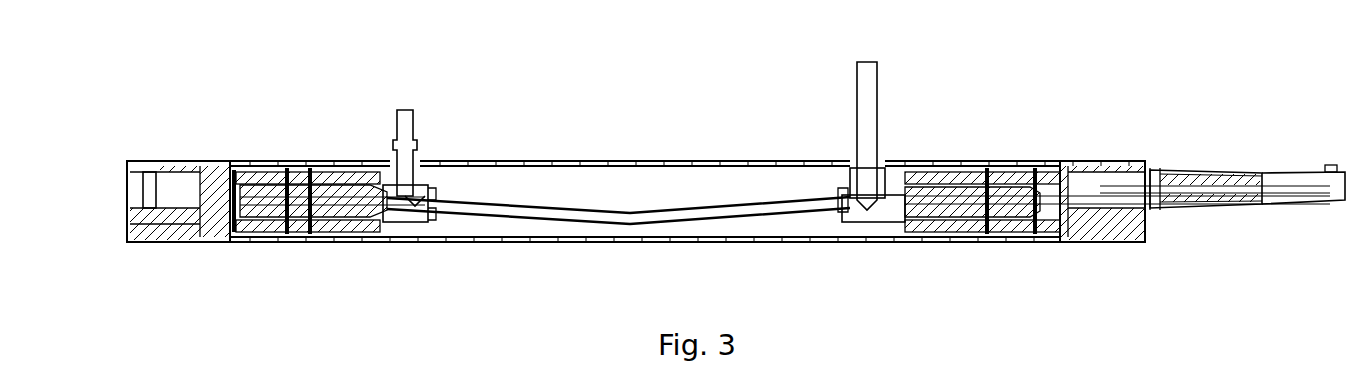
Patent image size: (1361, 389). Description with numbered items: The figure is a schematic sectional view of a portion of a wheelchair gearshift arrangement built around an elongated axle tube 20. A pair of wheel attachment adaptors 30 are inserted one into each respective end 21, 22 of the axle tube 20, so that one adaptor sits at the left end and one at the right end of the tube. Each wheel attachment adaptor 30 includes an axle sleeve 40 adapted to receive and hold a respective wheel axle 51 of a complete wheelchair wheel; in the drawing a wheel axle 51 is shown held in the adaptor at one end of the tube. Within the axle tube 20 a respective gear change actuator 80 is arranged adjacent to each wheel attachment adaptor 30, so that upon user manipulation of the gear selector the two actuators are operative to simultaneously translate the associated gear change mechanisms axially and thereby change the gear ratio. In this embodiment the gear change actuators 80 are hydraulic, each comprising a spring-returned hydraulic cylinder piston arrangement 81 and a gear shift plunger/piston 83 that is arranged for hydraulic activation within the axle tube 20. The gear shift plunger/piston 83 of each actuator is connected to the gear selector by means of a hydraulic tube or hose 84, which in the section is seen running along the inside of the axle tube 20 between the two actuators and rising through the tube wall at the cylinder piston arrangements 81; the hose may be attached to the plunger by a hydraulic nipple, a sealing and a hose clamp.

The axle tube 20 is at (578, 162).
The end of the axle tube 21 is at (127, 225).
The end of the axle tube 22 is at (1147, 232).
The wheel attachment adaptor 30 is at (166, 140).
The axle sleeve 40 is at (178, 190).
The wheel axle 51 is at (1177, 168).
The gear change actuator 80 is at (294, 256).
The hydraulic cylinder piston arrangement 81 is at (285, 170).
The gear shift plunger/piston 83 is at (335, 222).
The hydraulic tube or hose 84 is at (602, 213).